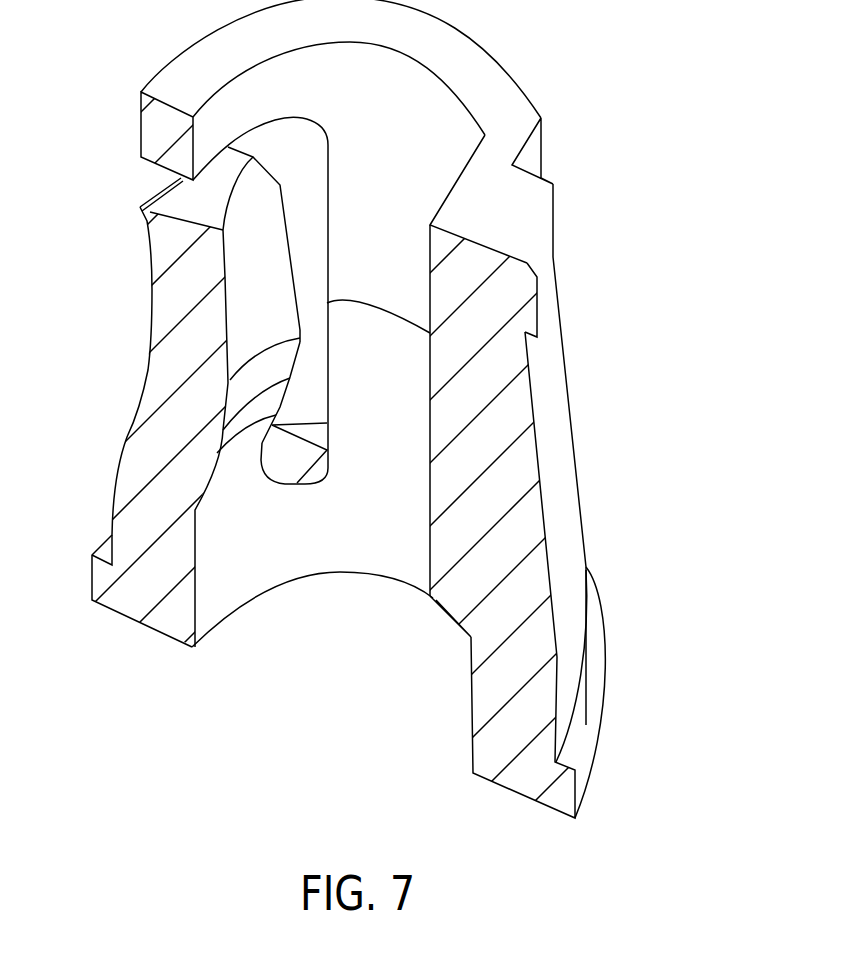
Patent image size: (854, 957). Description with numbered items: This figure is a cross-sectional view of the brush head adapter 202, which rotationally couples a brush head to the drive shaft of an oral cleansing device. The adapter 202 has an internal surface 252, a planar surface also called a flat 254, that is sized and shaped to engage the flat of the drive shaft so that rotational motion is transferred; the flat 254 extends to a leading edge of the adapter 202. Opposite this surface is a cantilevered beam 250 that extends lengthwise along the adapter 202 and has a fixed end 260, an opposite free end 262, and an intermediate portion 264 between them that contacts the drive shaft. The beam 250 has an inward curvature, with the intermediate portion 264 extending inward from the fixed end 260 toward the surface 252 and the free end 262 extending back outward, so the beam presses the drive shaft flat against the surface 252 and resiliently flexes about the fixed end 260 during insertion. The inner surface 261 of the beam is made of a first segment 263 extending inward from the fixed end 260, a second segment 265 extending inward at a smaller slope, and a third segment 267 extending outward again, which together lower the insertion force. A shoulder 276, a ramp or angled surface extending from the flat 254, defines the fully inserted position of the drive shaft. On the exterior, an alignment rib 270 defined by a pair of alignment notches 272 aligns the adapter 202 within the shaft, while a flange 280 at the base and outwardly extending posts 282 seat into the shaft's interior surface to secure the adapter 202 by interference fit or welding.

The adapter 202 is at (604, 58).
The cantilevered beam 250 is at (167, 310).
The internal surface 252 is at (428, 298).
The flat 254 is at (430, 496).
The fixed end 260 is at (152, 510).
The inner surface 261 is at (223, 397).
The free end 262 is at (151, 212).
The first segment 263 is at (232, 458).
The intermediate portion 264 is at (180, 372).
The second segment 265 is at (270, 373).
The third segment 267 is at (263, 237).
The alignment rib 270 is at (520, 212).
The alignment notches 272 is at (553, 163).
The shoulder 276 is at (441, 611).
The flange 280 is at (592, 717).
The posts 282 is at (540, 305).